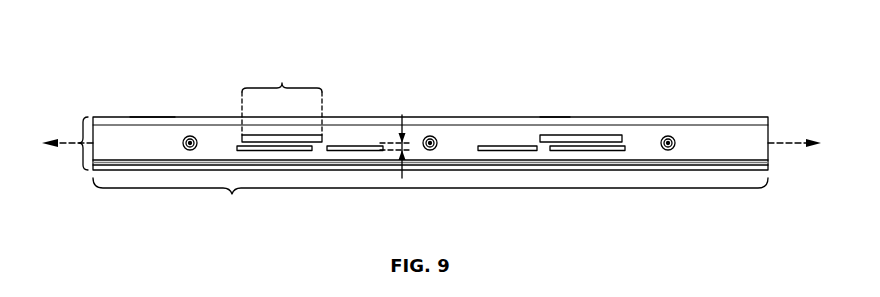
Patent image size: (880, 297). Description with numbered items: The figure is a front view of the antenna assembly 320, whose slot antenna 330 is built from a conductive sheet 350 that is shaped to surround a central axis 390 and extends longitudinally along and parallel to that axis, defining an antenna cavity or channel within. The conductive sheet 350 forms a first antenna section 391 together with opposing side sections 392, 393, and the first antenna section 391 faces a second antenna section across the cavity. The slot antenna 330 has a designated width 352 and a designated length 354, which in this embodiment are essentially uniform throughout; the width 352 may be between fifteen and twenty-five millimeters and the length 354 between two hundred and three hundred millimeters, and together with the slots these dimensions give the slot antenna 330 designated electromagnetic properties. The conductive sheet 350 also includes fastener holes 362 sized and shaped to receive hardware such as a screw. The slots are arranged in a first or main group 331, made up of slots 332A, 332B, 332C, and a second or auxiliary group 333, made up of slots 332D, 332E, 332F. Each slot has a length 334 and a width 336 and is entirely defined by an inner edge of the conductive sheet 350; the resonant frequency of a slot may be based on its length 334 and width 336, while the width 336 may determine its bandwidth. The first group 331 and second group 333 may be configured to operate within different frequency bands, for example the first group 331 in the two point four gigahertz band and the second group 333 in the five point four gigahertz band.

The antenna assembly 320 is at (688, 61).
The slot antenna 330 is at (513, 117).
The first group 331 is at (312, 117).
The slot 332A is at (317, 148).
The slot 332B is at (290, 152).
The slot 332C is at (364, 143).
The slot 332D is at (514, 152).
The slot 332E is at (594, 133).
The slot 332F is at (594, 152).
The second group 333 is at (552, 117).
The length 334 is at (282, 94).
The width 336 is at (403, 130).
The conductive sheet 350 is at (730, 143).
The width 352 is at (82, 154).
The length 354 is at (430, 201).
The fastener holes 362 is at (195, 137).
The central axis 390 is at (788, 143).
The first antenna section 391 is at (130, 133).
The side section 392 is at (157, 171).
The side section 393 is at (152, 116).